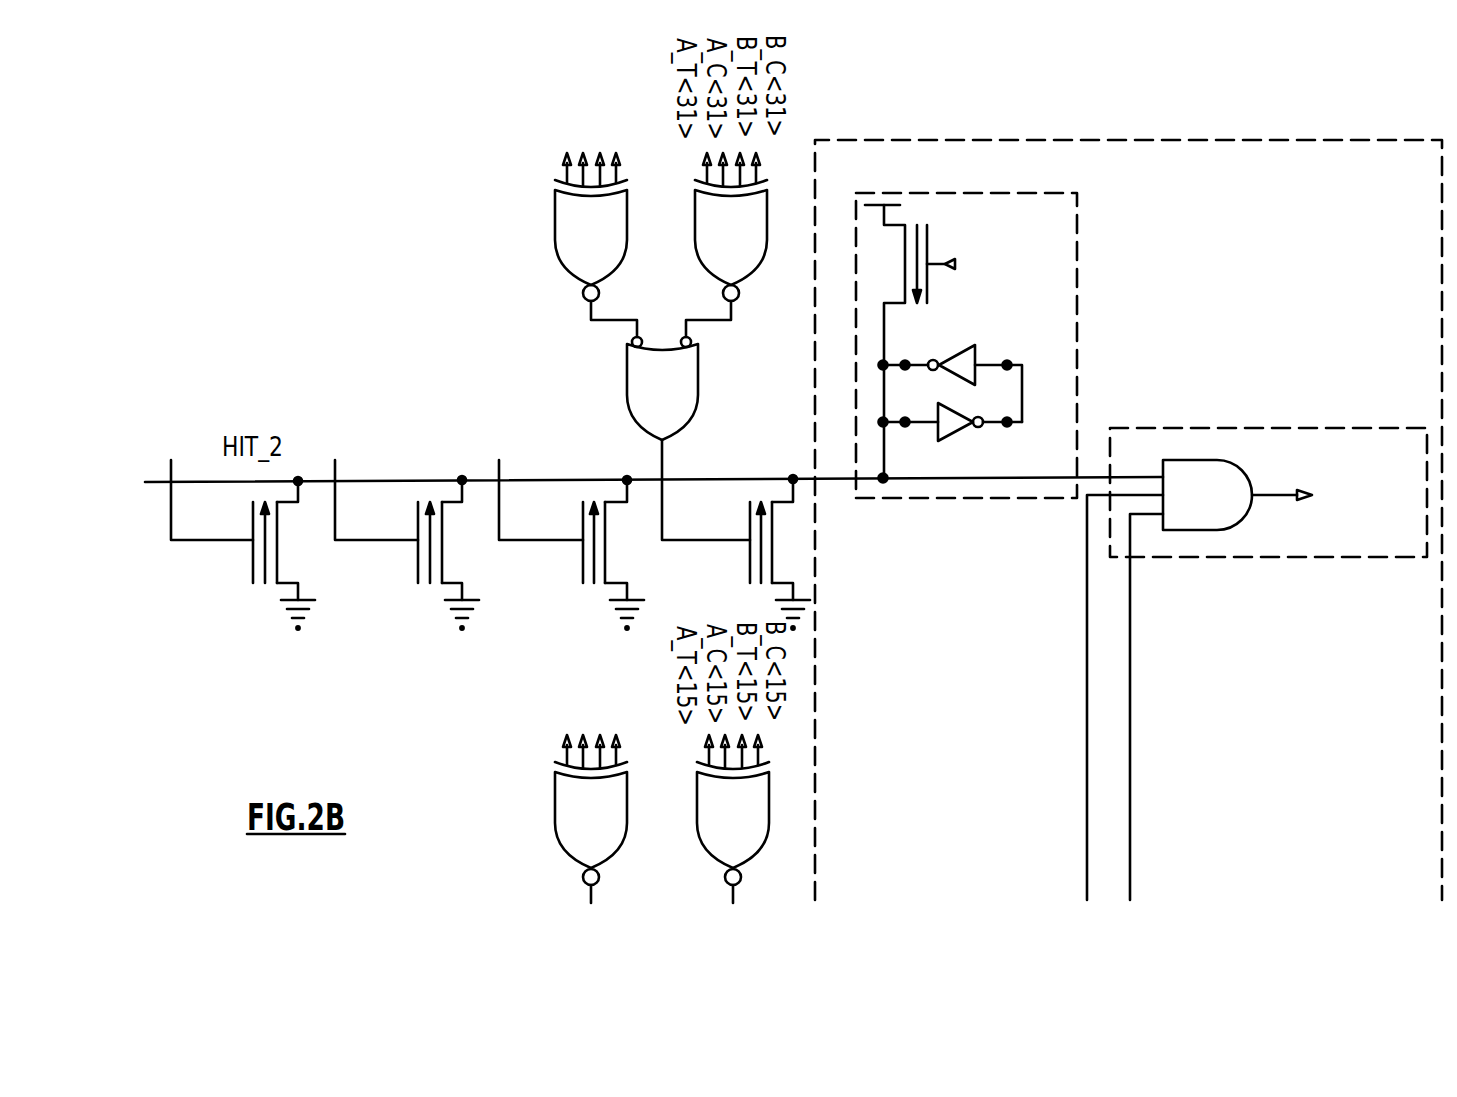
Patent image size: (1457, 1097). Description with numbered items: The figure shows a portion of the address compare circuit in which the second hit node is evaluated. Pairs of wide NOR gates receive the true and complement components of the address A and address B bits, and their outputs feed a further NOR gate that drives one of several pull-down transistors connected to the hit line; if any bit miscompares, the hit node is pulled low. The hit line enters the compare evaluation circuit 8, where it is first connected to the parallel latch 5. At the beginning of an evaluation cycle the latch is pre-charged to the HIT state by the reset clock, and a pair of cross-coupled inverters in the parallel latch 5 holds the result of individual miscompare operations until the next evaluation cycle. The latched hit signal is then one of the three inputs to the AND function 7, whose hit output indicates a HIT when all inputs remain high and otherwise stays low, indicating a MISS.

The parallel latch 5 is at (918, 500).
The AND function 7 is at (1183, 428).
The compare evaluation circuit 8 is at (980, 141).